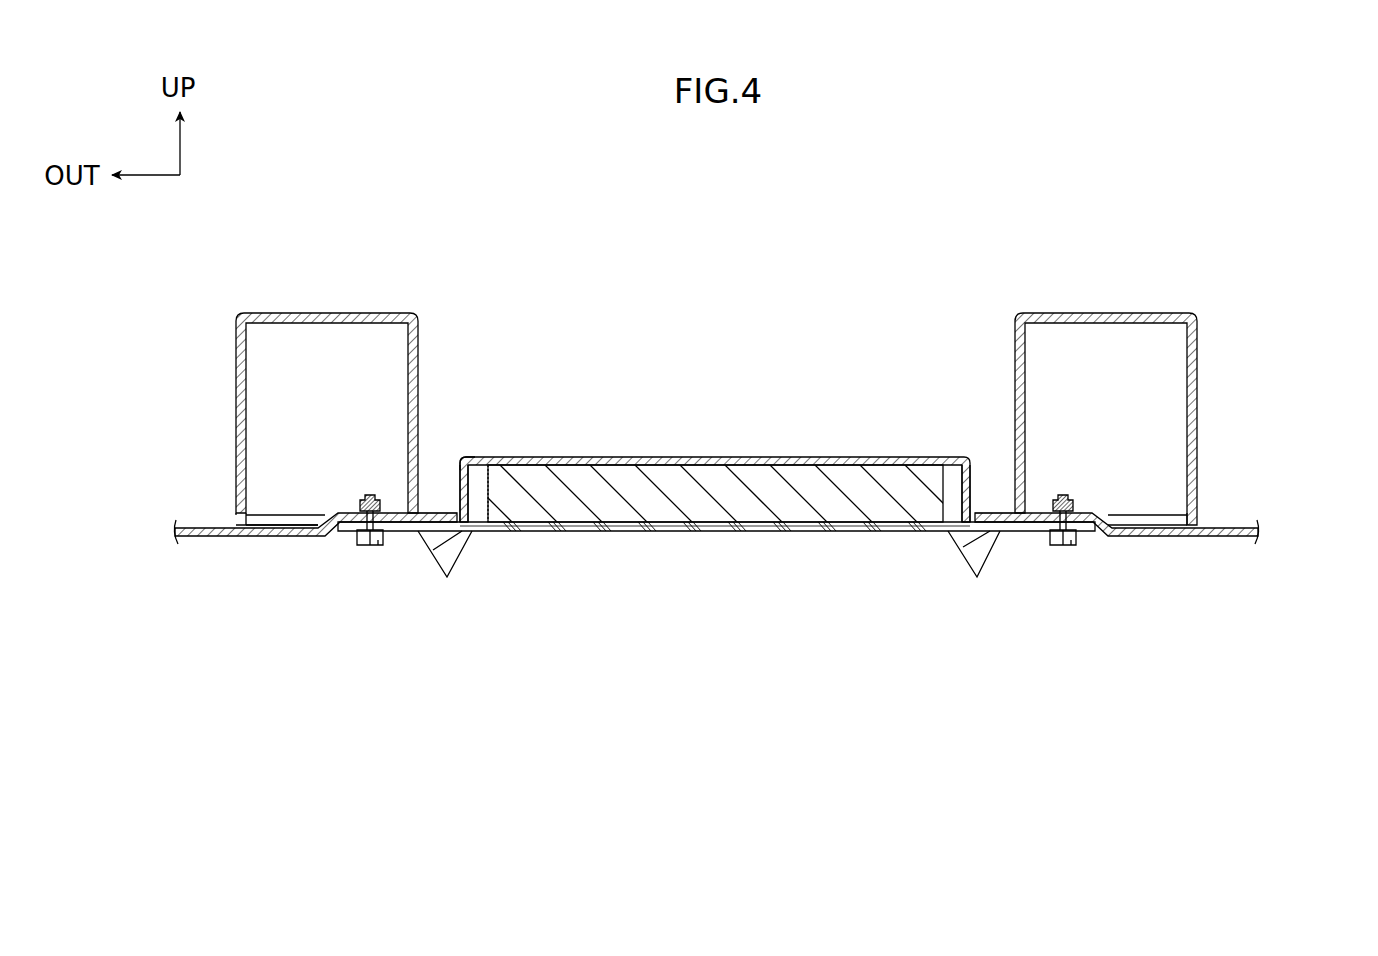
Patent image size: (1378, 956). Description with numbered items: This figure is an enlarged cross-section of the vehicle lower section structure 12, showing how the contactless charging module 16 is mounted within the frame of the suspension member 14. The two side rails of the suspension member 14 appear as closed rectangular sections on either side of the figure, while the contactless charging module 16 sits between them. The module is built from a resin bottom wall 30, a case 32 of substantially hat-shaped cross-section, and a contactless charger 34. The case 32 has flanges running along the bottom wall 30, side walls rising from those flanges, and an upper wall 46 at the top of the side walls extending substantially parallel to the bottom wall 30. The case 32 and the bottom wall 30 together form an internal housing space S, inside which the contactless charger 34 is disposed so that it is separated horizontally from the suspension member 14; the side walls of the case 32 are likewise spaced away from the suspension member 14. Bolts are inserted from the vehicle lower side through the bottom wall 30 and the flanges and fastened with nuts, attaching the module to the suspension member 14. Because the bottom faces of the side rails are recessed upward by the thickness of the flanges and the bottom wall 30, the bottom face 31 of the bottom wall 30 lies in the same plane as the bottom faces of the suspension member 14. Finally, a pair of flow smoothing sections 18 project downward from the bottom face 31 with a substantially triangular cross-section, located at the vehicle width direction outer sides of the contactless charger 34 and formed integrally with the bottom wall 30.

The vehicle lower section structure 12 is at (1168, 467).
The suspension member 14 is at (1161, 408).
The contactless charging module 16 is at (716, 485).
The flow smoothing section 18 is at (452, 578).
The bottom wall 30 is at (405, 534).
The bottom face 31 is at (493, 533).
The case 32 is at (601, 455).
The contactless charger 34 is at (722, 470).
The upper wall 46 is at (535, 458).
The internal housing space S is at (489, 462).